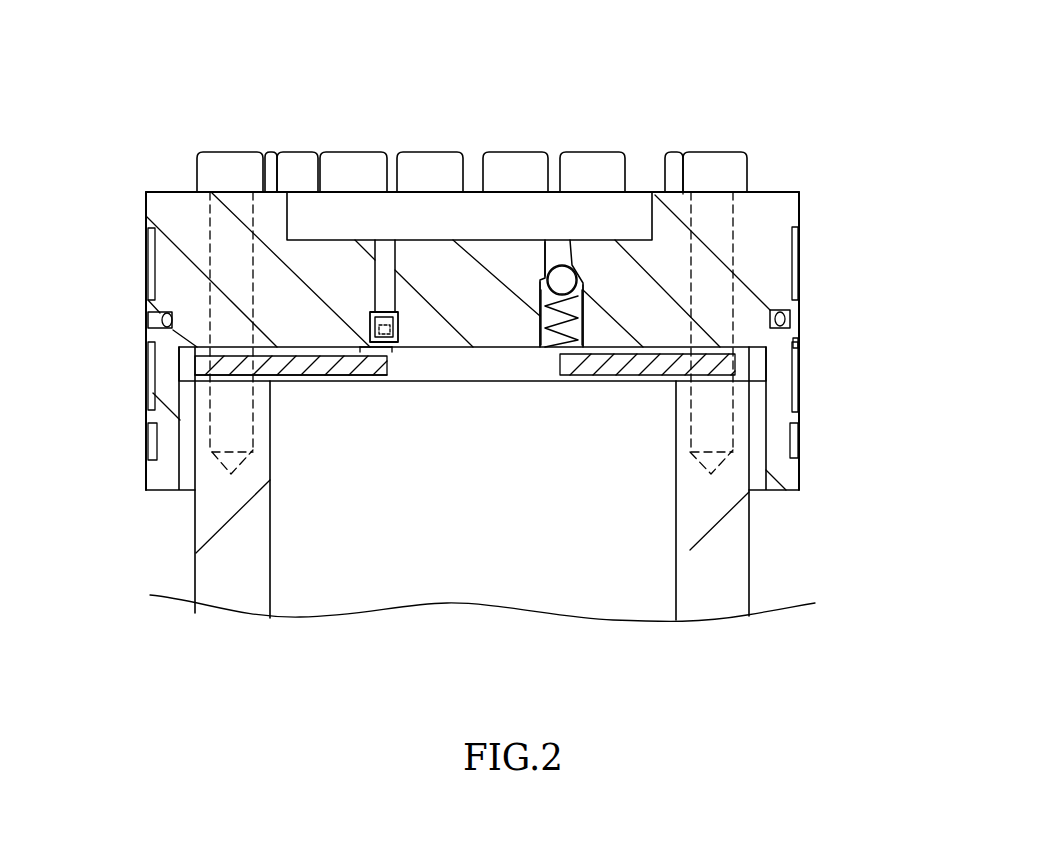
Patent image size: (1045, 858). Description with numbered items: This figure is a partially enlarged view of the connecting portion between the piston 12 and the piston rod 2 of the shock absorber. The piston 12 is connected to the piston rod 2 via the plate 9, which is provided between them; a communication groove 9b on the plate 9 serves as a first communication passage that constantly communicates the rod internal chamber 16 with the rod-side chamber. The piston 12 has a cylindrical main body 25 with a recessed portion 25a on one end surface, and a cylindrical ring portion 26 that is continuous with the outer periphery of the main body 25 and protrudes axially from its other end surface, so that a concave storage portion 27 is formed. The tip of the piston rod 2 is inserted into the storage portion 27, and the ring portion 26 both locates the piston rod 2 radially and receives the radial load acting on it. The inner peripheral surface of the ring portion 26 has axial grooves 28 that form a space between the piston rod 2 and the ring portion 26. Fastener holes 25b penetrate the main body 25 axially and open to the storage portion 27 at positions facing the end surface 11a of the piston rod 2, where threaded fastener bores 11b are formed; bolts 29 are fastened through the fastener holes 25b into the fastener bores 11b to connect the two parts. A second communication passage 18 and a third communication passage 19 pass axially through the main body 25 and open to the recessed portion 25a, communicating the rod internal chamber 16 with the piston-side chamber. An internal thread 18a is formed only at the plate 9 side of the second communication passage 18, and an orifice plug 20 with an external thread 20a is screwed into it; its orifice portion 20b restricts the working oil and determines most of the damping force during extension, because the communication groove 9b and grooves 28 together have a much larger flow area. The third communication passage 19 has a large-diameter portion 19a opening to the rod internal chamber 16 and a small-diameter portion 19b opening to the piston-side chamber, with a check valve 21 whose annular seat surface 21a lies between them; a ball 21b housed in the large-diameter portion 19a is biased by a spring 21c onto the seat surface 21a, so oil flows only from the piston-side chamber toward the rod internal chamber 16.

The piston rod 2 is at (770, 589).
The plate 9 is at (313, 363).
The communication groove 9b is at (207, 351).
The end surface 11a is at (790, 318).
The fastener bore 11b is at (728, 432).
The piston 12 is at (474, 106).
The rod internal chamber 16 is at (628, 533).
The second communication passage 18 is at (379, 312).
The internal thread 18a is at (390, 312).
The third communication passage 19 is at (510, 88).
The large-diameter portion 19a is at (545, 240).
The small-diameter portion 19b is at (560, 265).
The orifice plug 20 is at (320, 657).
The external thread 20a is at (361, 347).
The orifice portion 20b is at (392, 347).
The check valve 21 is at (868, 148).
The seat surface 21a is at (577, 277).
The ball 21b is at (578, 286).
The spring 21c is at (584, 298).
The main body 25 is at (757, 268).
The recessed portion 25a is at (607, 240).
The fastener hole 25b is at (698, 212).
The ring portion 26 is at (768, 477).
The storage portion 27 is at (212, 372).
The groove 28 is at (187, 443).
The bolt 29 is at (232, 212).